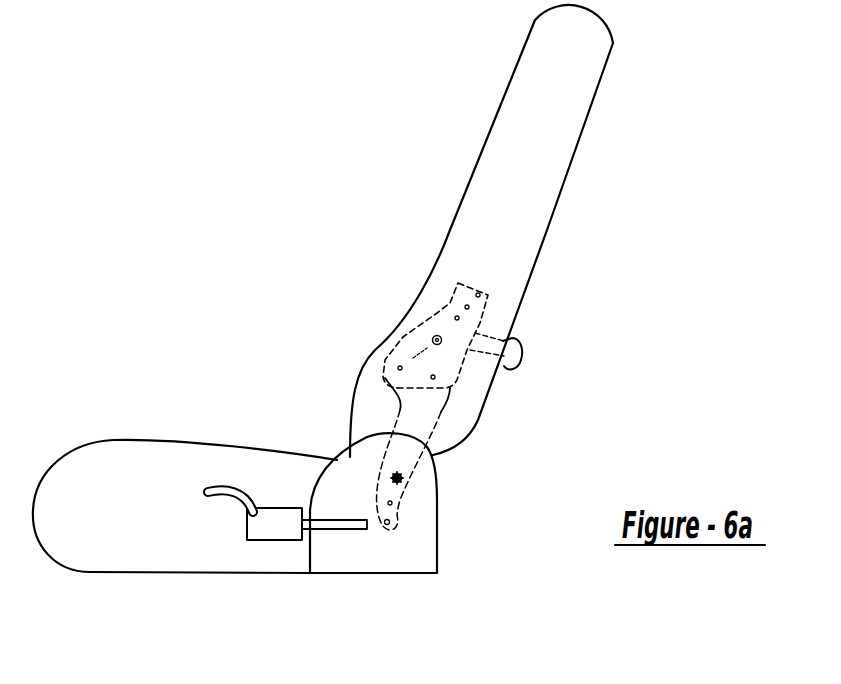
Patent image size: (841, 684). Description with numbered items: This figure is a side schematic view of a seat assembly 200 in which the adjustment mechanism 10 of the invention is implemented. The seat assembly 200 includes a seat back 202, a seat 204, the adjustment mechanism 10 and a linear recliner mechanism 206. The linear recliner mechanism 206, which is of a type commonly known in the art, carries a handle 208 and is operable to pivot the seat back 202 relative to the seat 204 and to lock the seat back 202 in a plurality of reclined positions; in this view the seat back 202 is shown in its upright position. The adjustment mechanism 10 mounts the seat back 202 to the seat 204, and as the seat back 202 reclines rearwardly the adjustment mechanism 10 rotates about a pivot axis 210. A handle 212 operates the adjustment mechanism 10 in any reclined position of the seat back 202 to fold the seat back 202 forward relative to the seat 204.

The adjustment mechanism 10 is at (402, 338).
The seat assembly 200 is at (210, 271).
The seat back 202 is at (578, 77).
The seat 204 is at (53, 517).
The linear recliner mechanism 206 is at (280, 525).
The handle 208 is at (208, 487).
The pivot axis 210 is at (401, 477).
The handle 212 is at (522, 355).